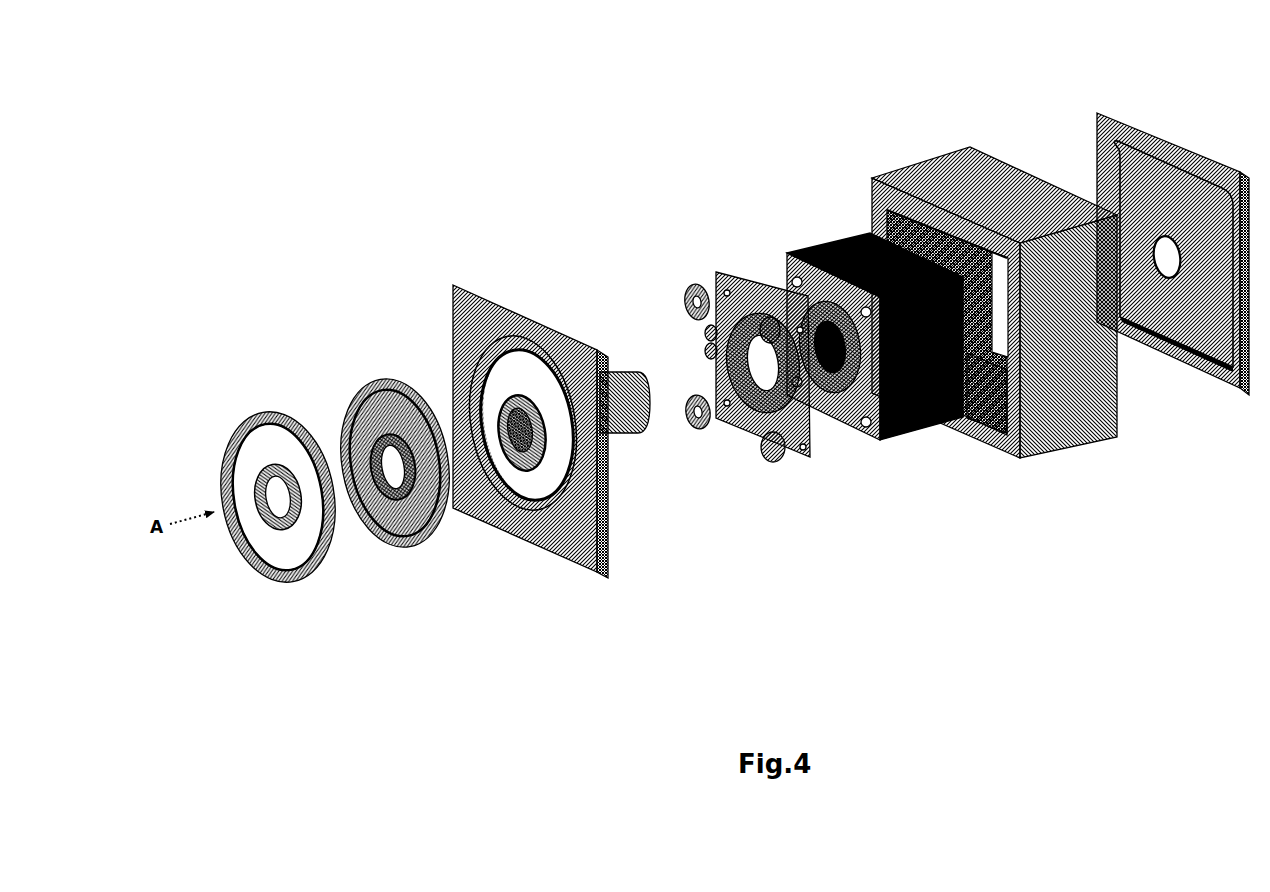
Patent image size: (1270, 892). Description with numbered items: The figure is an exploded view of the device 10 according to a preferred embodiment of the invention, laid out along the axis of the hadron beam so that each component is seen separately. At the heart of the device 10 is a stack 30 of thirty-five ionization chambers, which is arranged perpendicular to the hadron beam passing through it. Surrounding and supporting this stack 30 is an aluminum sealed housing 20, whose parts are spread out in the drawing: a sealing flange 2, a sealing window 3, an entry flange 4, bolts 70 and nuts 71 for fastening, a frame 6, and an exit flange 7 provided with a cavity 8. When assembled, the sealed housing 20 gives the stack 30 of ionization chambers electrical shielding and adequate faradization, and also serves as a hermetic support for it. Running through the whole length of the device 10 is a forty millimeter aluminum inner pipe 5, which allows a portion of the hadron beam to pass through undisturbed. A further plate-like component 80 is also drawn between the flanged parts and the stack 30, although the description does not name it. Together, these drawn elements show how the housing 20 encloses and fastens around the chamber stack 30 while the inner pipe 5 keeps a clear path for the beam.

The device 10 is at (483, 202).
The sealing flange 2 is at (312, 565).
The sealing window 3 is at (423, 548).
The entry flange 4 is at (548, 548).
The aluminum inner pipe 5 is at (622, 373).
The frame 6 is at (892, 168).
The exit flange 7 is at (1218, 342).
The cavity 8 is at (1175, 255).
The aluminum sealed housing 20 is at (1020, 502).
The stack of ionization chambers 30 is at (920, 432).
The bolts 70 is at (697, 423).
The nuts 71 is at (697, 410).
The mounting plate 80 is at (800, 450).